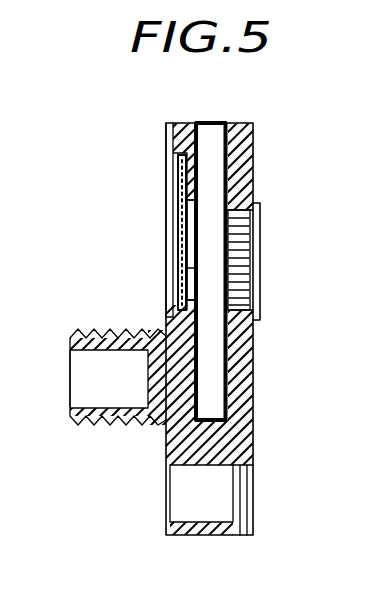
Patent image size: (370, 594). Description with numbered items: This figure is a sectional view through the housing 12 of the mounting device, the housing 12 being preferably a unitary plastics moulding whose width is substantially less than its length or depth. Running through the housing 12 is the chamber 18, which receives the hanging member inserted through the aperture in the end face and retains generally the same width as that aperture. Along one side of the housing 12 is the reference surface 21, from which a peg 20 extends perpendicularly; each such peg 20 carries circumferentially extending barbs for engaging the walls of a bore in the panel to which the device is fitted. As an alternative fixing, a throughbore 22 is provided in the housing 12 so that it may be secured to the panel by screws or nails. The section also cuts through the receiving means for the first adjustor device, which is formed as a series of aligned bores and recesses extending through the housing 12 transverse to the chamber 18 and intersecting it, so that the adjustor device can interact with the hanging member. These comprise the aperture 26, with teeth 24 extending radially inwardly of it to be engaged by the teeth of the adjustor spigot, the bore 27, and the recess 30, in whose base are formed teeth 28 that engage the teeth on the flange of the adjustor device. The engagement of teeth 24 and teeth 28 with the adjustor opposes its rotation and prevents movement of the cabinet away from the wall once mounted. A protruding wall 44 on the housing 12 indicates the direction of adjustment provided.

The housing 12 is at (243, 380).
The chamber 18 is at (211, 200).
The peg 20 is at (96, 362).
The reference surface 21 is at (172, 131).
The throughbore 22 is at (236, 495).
The teeth 24 is at (255, 247).
The aperture 26 is at (255, 273).
The bore 27 is at (188, 271).
The teeth 28 is at (183, 186).
The recess 30 is at (186, 218).
The protruding wall 44 is at (262, 203).